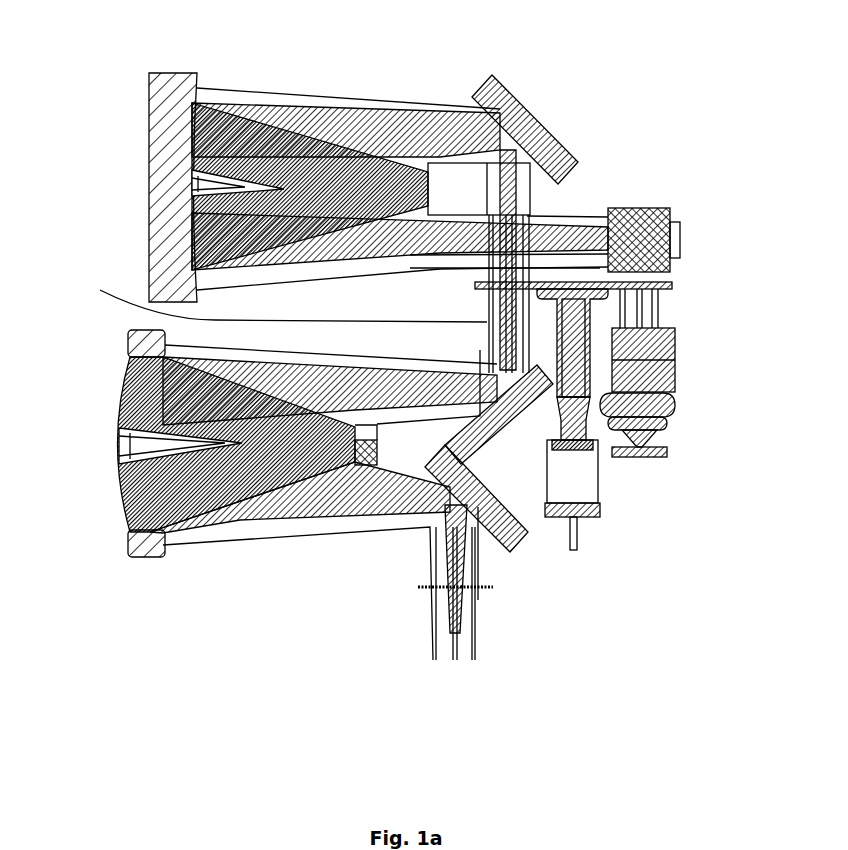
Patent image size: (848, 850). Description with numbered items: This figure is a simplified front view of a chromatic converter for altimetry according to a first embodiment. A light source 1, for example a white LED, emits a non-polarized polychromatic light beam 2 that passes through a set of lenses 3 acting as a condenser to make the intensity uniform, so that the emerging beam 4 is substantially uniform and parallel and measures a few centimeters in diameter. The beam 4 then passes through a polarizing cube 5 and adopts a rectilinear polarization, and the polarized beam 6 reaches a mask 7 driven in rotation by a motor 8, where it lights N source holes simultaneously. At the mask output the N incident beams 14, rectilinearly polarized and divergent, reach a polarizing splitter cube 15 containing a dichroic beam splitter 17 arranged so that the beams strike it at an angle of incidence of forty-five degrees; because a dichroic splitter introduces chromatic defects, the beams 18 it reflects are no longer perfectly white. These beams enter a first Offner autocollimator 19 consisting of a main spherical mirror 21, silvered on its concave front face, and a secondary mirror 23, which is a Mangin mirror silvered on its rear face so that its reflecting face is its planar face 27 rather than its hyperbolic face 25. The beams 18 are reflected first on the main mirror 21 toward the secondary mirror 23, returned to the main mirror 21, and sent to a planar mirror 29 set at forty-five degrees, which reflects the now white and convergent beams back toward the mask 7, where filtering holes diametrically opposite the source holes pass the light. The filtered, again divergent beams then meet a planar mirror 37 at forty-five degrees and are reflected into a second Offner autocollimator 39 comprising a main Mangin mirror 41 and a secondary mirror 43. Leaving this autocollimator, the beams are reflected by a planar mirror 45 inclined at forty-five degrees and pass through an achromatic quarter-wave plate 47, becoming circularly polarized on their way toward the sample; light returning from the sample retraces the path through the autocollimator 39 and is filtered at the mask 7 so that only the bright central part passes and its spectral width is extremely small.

The light source 1 is at (660, 457).
The non-polarized polychromatic light beam 2 is at (650, 440).
The set of lenses 3 is at (673, 413).
The beam 4 is at (660, 397).
The polarizing cube 5 is at (670, 348).
The polarized beam 6 is at (658, 313).
The mask 7 is at (672, 285).
The motor 8 is at (598, 506).
The incident beams 14 is at (657, 279).
The polarizing splitter cube 15 is at (660, 208).
The dichroic beam splitter 17 is at (628, 210).
The reflected beams 18 is at (587, 219).
The upper optical assembly 19 is at (132, 60).
The main spherical mirror 21 is at (163, 180).
The secondary mirror 23 is at (423, 172).
The hyperbolic face 25 is at (373, 180).
The planar face 27 is at (443, 178).
The planar mirror 29 is at (500, 78).
The planar mirror 37 is at (527, 547).
The second Offner autocollimator 39 is at (153, 570).
The main Mangin mirror 41 is at (113, 445).
The secondary mirror 43 is at (363, 468).
The planar mirror 45 is at (497, 430).
The achromatic quarter-wave plate 47 is at (493, 587).